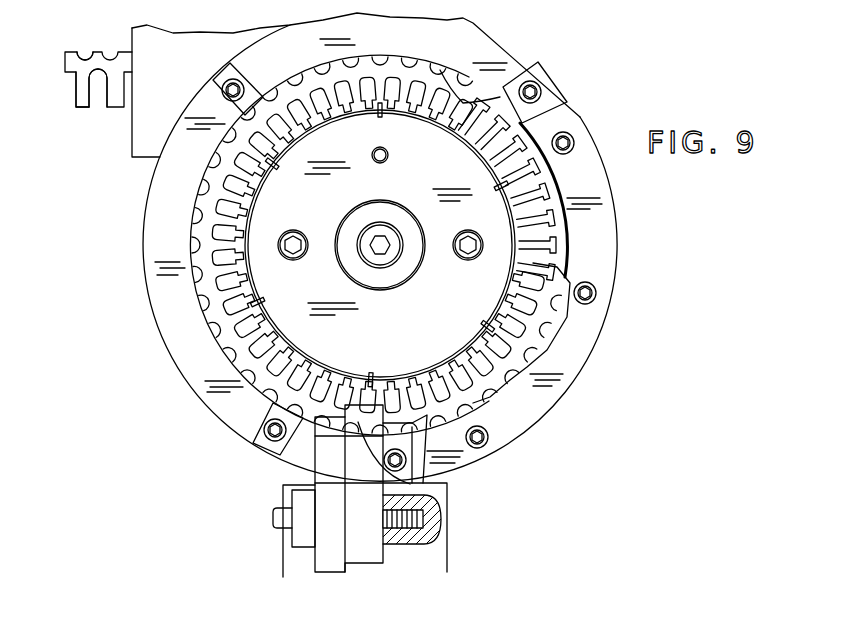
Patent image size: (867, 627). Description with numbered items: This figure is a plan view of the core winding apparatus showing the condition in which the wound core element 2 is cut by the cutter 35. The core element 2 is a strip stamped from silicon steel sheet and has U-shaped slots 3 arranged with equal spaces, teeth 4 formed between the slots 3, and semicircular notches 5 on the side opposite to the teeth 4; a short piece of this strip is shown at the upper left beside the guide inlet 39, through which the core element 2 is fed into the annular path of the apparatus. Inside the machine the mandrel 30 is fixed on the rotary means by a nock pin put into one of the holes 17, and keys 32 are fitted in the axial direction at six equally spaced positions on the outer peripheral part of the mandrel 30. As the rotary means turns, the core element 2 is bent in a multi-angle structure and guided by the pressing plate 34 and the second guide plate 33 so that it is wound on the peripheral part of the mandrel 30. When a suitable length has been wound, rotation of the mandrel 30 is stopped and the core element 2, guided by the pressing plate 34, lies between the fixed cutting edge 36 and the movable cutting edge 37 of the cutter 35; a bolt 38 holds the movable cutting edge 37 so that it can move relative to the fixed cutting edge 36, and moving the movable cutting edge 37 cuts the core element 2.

The core element 2 is at (99, 62).
The U-shaped slot 3 is at (97, 97).
The tooth 4 is at (77, 100).
The semicircular notch 5 is at (85, 52).
The hole 17 is at (387, 153).
The mandrel 30 is at (290, 292).
The key 32 is at (484, 322).
The second guide plate 33 is at (503, 117).
The pressing plate 34 is at (577, 340).
The cutter 35 is at (358, 572).
The fixed cutting edge 36 is at (410, 484).
The movable cutting edge 37 is at (320, 423).
The bolt 38 is at (272, 527).
The guide inlet 39 is at (142, 143).